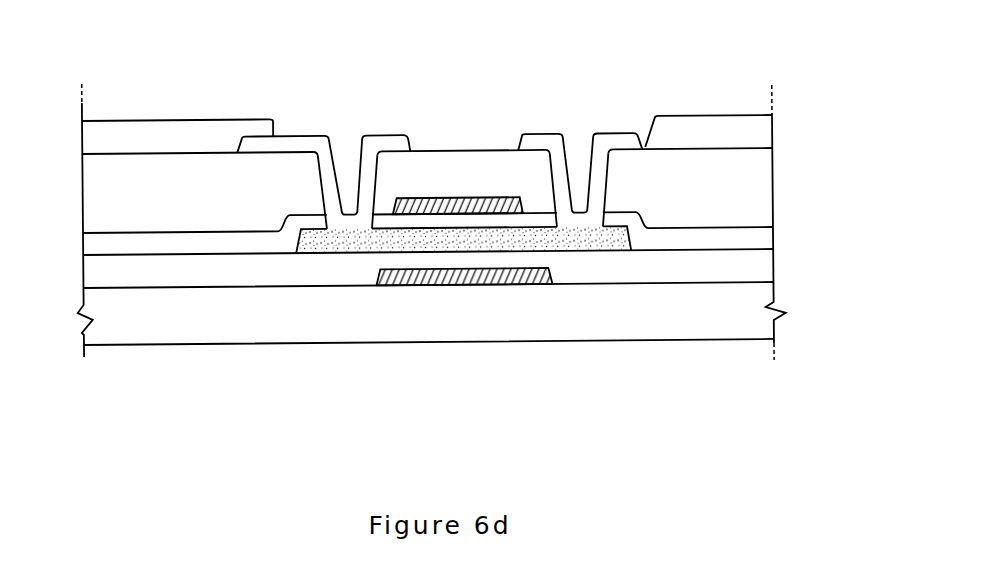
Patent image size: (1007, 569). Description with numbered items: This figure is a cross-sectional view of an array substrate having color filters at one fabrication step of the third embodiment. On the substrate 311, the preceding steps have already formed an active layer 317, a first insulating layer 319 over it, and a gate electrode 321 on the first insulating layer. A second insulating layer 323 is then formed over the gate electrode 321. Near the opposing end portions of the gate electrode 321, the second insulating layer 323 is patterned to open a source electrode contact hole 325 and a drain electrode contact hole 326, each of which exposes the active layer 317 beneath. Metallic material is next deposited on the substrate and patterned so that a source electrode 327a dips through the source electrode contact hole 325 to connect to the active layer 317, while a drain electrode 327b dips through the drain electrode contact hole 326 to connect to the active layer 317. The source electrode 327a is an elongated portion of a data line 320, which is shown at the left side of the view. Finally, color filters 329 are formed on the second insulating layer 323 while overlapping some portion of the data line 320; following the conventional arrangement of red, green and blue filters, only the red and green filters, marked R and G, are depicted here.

The substrate 311 is at (478, 323).
The active layer 317 is at (582, 242).
The first insulating layer 319 is at (764, 246).
The data line 320 is at (256, 145).
The gate electrode 321 is at (453, 201).
The second insulating layer 323 is at (477, 153).
The source electrode contact hole 325 is at (349, 157).
The drain electrode contact hole 326 is at (582, 159).
The source electrode 327a is at (383, 148).
The drain electrode 327b is at (629, 142).
The color filters 329 is at (718, 119).